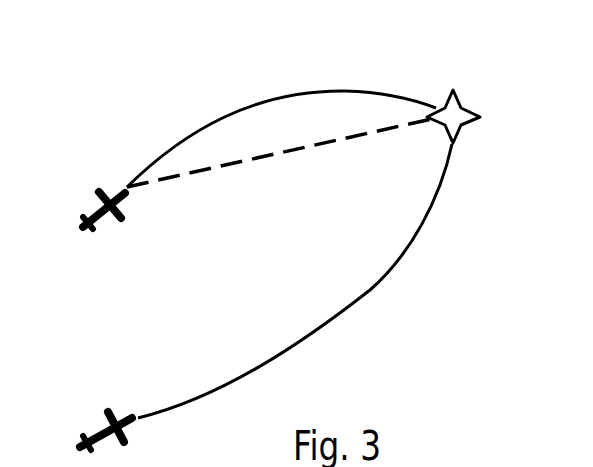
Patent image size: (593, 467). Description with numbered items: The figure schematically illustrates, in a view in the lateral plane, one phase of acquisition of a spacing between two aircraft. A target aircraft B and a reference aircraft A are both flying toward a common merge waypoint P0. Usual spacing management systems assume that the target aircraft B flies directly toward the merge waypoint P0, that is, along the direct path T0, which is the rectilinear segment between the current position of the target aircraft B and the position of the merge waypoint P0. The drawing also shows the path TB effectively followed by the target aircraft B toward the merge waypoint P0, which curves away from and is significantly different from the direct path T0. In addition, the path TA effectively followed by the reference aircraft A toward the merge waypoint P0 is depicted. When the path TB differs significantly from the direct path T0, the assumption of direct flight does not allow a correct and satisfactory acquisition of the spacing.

The reference aircraft A is at (98, 425).
The target aircraft B is at (103, 220).
The merge waypoint P0 is at (465, 108).
The path of the reference aircraft TA is at (358, 302).
The path of the target aircraft TB is at (333, 91).
The direct path T0 is at (295, 148).